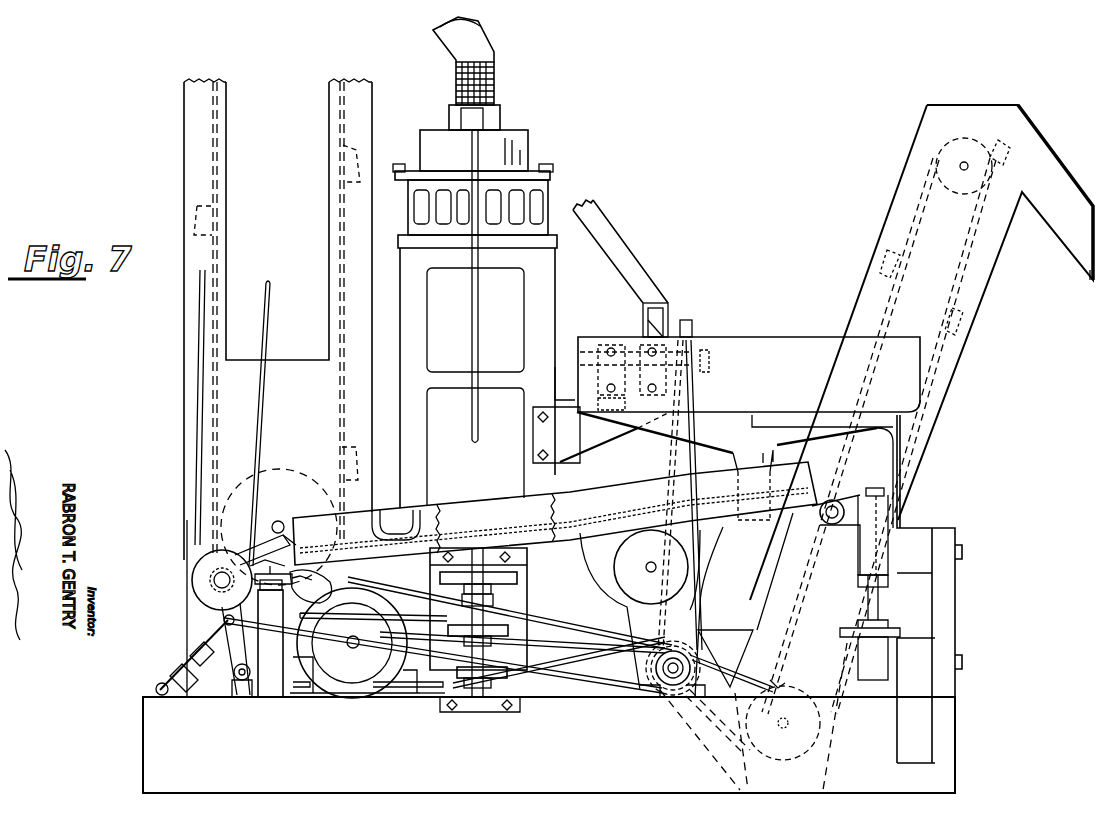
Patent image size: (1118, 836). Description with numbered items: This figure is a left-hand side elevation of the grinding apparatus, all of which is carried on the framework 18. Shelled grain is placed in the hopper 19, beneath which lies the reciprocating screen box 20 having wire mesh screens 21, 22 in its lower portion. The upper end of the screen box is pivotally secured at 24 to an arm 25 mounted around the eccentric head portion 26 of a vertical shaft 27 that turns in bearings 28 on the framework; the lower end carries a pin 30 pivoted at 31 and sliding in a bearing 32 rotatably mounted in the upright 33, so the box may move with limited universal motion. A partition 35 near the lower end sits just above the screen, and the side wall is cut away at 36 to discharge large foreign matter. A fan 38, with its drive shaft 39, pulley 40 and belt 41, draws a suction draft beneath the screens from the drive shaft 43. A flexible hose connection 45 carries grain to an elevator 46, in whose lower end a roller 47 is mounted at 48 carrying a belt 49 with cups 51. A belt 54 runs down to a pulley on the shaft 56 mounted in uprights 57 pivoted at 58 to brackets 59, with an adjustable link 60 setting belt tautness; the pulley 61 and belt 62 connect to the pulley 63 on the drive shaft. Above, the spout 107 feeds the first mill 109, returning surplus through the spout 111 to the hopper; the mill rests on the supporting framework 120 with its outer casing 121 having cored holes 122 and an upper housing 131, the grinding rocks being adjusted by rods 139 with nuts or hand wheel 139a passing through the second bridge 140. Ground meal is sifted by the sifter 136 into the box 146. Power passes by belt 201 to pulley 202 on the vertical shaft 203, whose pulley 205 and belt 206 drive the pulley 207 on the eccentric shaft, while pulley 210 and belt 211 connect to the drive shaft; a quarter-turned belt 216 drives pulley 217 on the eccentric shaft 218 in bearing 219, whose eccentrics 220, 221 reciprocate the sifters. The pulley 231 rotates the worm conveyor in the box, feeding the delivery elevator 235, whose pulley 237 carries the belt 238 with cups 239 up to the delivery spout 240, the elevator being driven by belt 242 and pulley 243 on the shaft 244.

The framework 18 is at (950, 508).
The hopper 19 is at (812, 340).
The reciprocating screen box 20 is at (554, 520).
The wire mesh screen 21 is at (462, 520).
The wire mesh screen 22 is at (524, 555).
The pivot 24 is at (834, 525).
The arm 25 is at (858, 500).
The eccentric head portion 26 is at (878, 488).
The vertically disposed shaft 27 is at (866, 592).
The bearings 28 is at (858, 570).
The pin 30 is at (290, 574).
The pivot 31 is at (271, 595).
The bearing 32 is at (272, 565).
The upright 33 is at (270, 643).
The partition 35 is at (350, 309).
The cut-away portion 36 is at (410, 514).
The fan 38 is at (338, 688).
The drive shaft 39 is at (354, 648).
The pulley 40 is at (352, 643).
The belt 41 is at (416, 693).
The drive shaft 43 is at (652, 700).
The flexible hose connection 45 is at (322, 588).
The elevator 46 is at (184, 325).
The roller 47 is at (298, 472).
The roller mounting 48 is at (280, 521).
The belt 49 is at (213, 420).
The cups 51 is at (197, 206).
The belt 54 is at (270, 290).
The shaft 56 is at (241, 572).
The uprights 57 is at (225, 620).
The pivot 58 is at (234, 672).
The brackets 59 is at (242, 697).
The adjustable link 60 is at (180, 668).
The pulley 61 is at (200, 575).
The belt 62 is at (590, 620).
The pulley 63 is at (676, 690).
The spout 107 is at (478, 30).
The first mill 109 is at (528, 132).
The spout 111 is at (595, 212).
The supporting framework 120 is at (545, 283).
The outer casing 121 is at (550, 178).
The cored holes 122 is at (420, 206).
The upper housing 131 is at (528, 145).
The reciprocating sifter 136 is at (565, 384).
The vertically disposed rods 139 is at (472, 309).
The nuts or hand wheel 139a is at (456, 97).
The second bridge 140 is at (500, 110).
The box 146 is at (720, 548).
The belt 201 is at (517, 578).
The pulley 202 is at (517, 590).
The vertically disposed shaft 203 is at (478, 612).
The pulley 205 is at (494, 640).
The belt 206 is at (553, 648).
The pulley 207 is at (848, 625).
The pulley 210 is at (494, 682).
The belt 211 is at (618, 661).
The belt 216 is at (680, 452).
The pulley 217 is at (692, 326).
The eccentric shaft 218 is at (709, 358).
The bearing 219 is at (562, 435).
The eccentric 220 is at (680, 320).
The eccentric 221 is at (634, 355).
The pulley 231 is at (644, 555).
The delivery elevator 235 is at (968, 388).
The pulley 237 is at (968, 192).
The belt 238 is at (968, 248).
The cups 239 is at (963, 322).
The delivery spout 240 is at (1090, 275).
The belt 242 is at (738, 668).
The pulley 243 is at (820, 740).
The shaft 244 is at (783, 723).